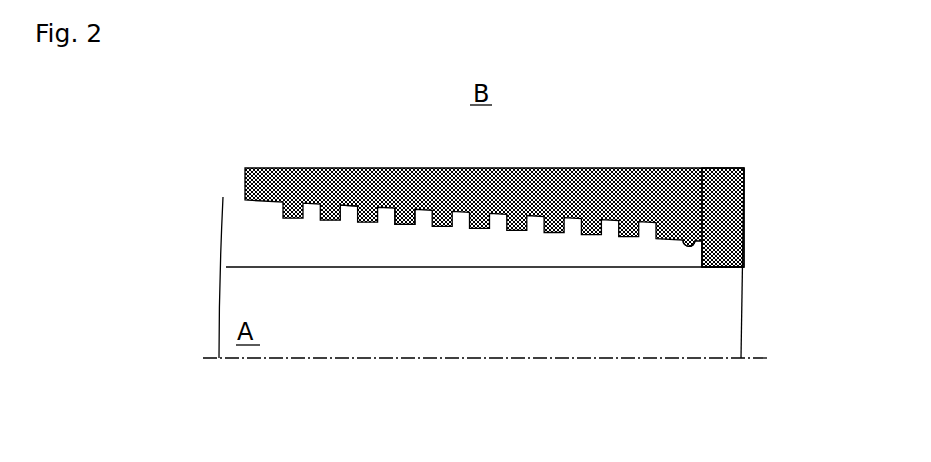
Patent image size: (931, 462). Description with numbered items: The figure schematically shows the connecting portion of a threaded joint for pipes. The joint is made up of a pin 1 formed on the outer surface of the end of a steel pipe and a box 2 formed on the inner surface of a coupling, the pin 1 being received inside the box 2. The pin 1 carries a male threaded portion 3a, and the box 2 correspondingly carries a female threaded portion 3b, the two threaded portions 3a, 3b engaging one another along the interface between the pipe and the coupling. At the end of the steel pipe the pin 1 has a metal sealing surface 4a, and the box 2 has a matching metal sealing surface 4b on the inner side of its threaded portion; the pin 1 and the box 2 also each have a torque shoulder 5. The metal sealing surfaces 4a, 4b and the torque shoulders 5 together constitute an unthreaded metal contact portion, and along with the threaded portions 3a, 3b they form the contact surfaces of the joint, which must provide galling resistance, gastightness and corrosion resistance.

The pin 1 is at (208, 233).
The box 2 is at (603, 146).
The male threaded portion 3a is at (345, 203).
The female threaded portion 3b is at (405, 224).
The metal sealing surface 4a is at (656, 240).
The metal sealing surface 4b is at (703, 168).
The torque shoulder 5 is at (704, 250).